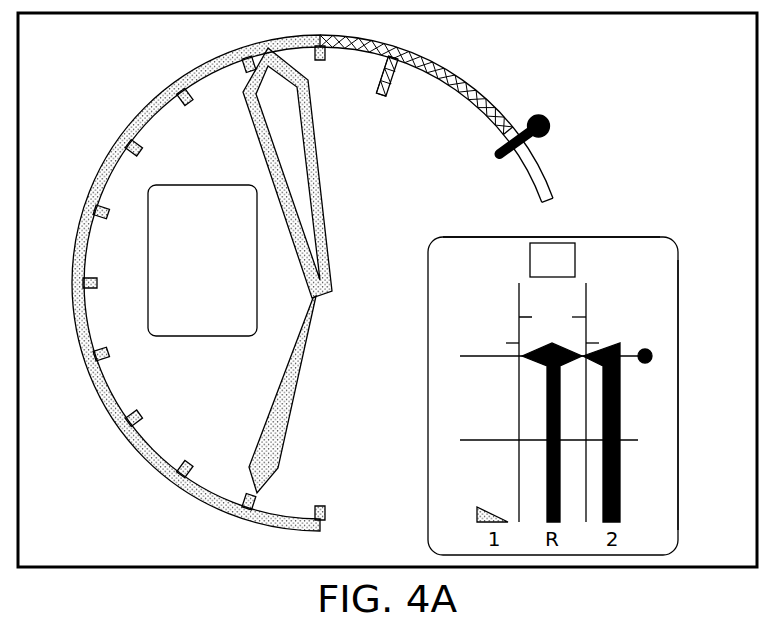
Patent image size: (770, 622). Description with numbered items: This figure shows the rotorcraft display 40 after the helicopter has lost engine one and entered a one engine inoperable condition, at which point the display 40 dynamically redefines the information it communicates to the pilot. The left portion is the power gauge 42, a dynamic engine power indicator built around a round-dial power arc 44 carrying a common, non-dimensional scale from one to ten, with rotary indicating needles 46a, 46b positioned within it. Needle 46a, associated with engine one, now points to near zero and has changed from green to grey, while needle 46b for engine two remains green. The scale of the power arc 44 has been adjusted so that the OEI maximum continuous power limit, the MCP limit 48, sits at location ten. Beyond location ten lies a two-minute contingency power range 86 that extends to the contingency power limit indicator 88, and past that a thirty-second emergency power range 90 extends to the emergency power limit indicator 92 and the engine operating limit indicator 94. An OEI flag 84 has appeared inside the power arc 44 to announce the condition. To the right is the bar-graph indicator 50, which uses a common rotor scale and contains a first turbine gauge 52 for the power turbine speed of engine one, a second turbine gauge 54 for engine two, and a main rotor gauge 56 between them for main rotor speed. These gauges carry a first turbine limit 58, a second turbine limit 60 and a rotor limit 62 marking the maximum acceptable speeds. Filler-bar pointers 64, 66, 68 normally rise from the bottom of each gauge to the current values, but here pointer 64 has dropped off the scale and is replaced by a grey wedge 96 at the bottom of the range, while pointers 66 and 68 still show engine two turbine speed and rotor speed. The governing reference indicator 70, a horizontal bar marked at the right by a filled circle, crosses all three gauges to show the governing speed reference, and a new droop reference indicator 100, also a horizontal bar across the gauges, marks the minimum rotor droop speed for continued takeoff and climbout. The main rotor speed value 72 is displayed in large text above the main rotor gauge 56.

The display 40 is at (725, 55).
The power gauge 42 is at (138, 461).
The power arc 44 is at (103, 163).
The indicating needle 46a is at (270, 412).
The indicating needle 46b is at (322, 195).
The MCP limit 48 is at (307, 52).
The bar-graph indicator 50 is at (428, 395).
The first turbine gauge 52 is at (497, 288).
The second turbine gauge 54 is at (633, 305).
The main rotor gauge 56 is at (578, 290).
The first turbine limit 58 is at (517, 343).
The second turbine limit 60 is at (593, 343).
The rotor limit 62 is at (520, 323).
The pointer 64 is at (552, 432).
The pointer 66 is at (612, 342).
The pointer 68 is at (567, 347).
The governing reference indicator 70 is at (630, 362).
The main rotor speed value 72 is at (578, 262).
The OEI flag 84 is at (183, 185).
The two-minute contingency power range 86 is at (366, 47).
The contingency power limit indicator 88 is at (381, 96).
The thirty-second emergency power range 90 is at (477, 90).
The emergency power limit indicator 92 is at (500, 158).
The engine operating limit indicator 94 is at (543, 115).
The grey wedge 96 is at (477, 508).
The droop reference indicator 100 is at (632, 436).